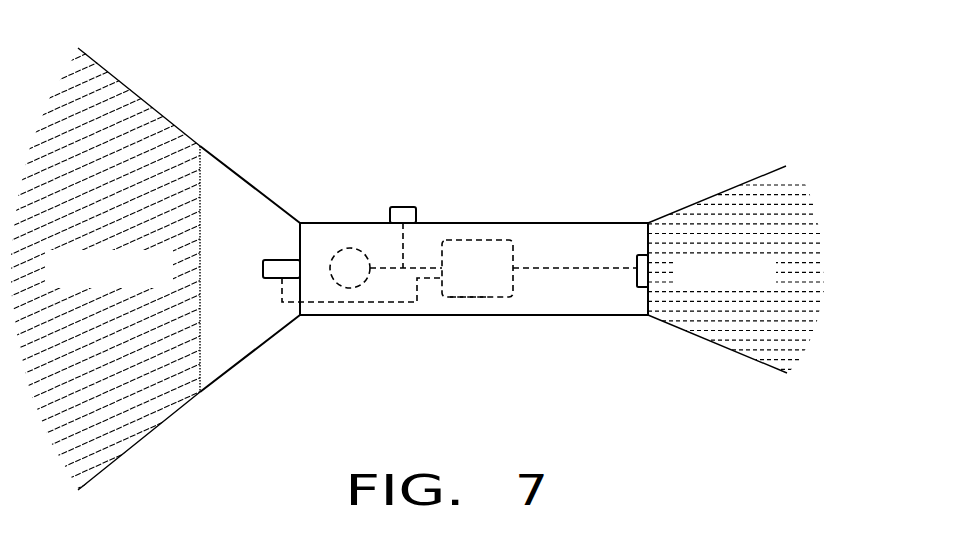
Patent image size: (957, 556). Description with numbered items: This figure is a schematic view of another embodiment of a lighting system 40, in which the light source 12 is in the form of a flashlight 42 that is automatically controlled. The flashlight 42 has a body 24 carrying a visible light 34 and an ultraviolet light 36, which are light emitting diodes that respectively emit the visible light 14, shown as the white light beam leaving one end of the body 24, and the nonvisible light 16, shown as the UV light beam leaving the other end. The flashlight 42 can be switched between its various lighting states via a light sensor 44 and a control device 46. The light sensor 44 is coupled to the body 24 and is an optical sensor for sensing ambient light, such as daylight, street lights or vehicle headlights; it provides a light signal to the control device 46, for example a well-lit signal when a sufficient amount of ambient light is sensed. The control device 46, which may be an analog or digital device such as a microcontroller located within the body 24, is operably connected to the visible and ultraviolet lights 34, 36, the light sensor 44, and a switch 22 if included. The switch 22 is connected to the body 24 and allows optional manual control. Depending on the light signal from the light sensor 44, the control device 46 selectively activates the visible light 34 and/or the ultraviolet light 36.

The light source 12 is at (490, 223).
The visible light 14 is at (160, 112).
The nonvisible light 16 is at (745, 183).
The switch 22 is at (356, 293).
The body 24 is at (588, 223).
The visible light 34 is at (282, 258).
The ultraviolet light 36 is at (637, 289).
The lighting system 40 is at (571, 131).
The flashlight 42 is at (482, 298).
The light sensor 44 is at (403, 207).
The control device 46 is at (469, 300).